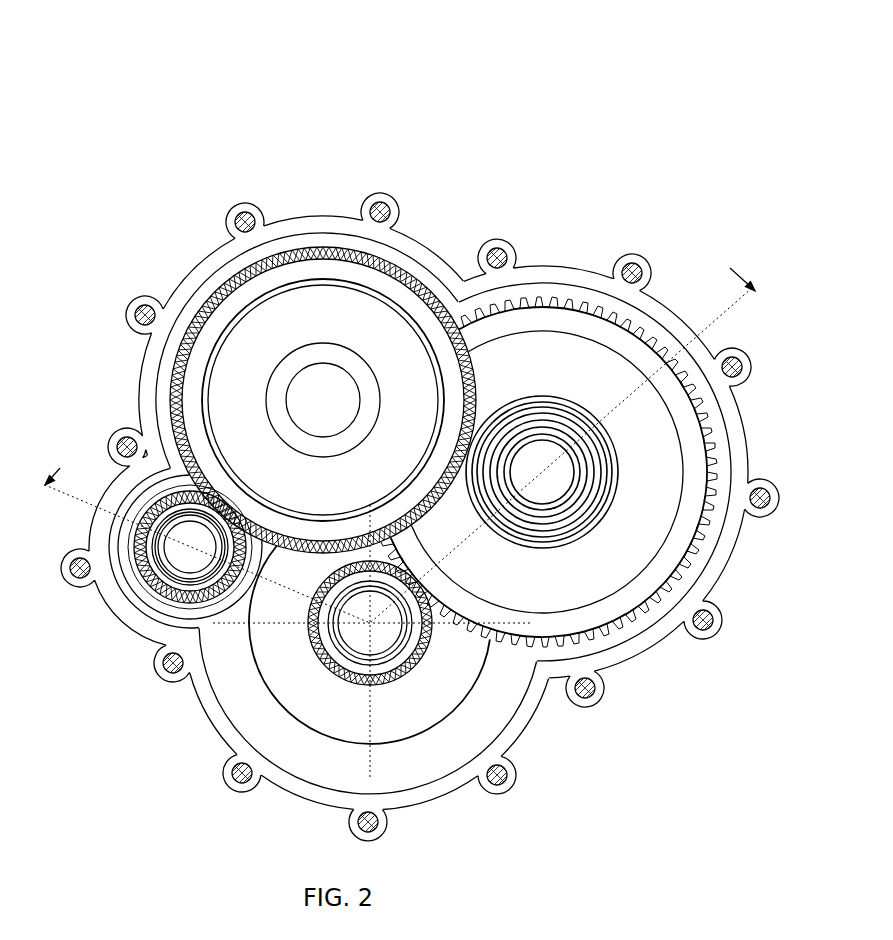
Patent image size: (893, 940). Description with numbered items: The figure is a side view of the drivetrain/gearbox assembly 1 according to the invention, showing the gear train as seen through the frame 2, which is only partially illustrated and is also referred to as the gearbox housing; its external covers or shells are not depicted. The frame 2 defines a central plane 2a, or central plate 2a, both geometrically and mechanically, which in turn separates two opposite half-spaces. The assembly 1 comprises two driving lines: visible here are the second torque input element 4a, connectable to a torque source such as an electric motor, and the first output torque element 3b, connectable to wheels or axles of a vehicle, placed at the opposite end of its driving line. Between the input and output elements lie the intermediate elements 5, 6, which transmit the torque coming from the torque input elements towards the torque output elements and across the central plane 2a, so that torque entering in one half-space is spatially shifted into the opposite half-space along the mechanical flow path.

The drivetrain/gearbox assembly 1 is at (325, 180).
The frame 2 is at (530, 713).
The central plane 2a is at (422, 758).
The first output torque element 3b is at (607, 562).
The second torque input element 4a is at (180, 510).
The intermediate element 5 is at (302, 685).
The intermediate element 6 is at (375, 283).